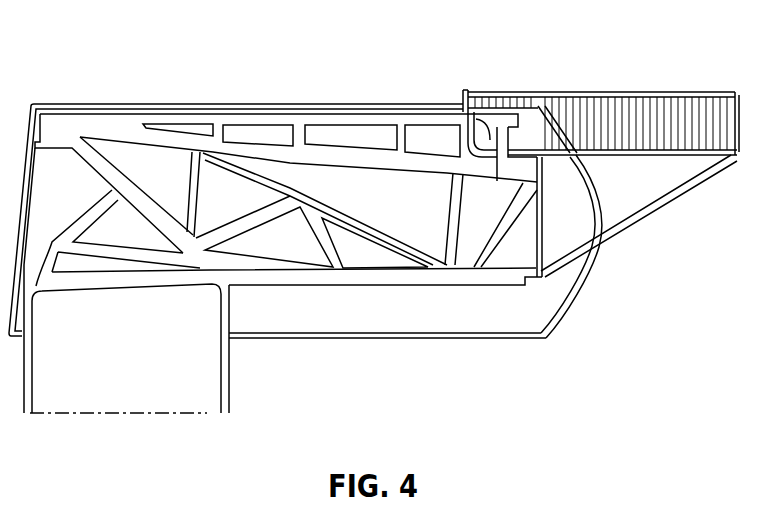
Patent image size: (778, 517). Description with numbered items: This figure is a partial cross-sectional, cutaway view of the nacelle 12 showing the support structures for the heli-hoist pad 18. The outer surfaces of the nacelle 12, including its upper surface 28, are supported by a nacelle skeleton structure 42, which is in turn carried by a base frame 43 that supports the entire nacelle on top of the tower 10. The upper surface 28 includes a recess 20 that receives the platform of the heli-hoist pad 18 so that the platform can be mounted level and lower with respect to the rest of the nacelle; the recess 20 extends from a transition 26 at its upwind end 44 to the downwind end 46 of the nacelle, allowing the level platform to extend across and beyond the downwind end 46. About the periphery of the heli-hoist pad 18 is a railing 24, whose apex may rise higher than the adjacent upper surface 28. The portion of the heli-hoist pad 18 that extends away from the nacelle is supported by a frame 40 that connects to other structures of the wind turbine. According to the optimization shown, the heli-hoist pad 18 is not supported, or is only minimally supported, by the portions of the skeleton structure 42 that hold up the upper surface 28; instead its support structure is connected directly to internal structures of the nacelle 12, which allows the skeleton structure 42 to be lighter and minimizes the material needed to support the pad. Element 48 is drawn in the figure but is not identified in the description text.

The tower 10 is at (231, 389).
The nacelle 12 is at (104, 74).
The heli-hoist pad 18 is at (607, 91).
The recess 20 is at (536, 140).
The railing 24 is at (715, 92).
The transition 26 is at (474, 112).
The upper surface 28 is at (214, 104).
The frame 40 is at (652, 203).
The skeleton structure 42 is at (261, 122).
The base frame 43 is at (118, 289).
The upwind end 44 is at (489, 120).
The downwind end 46 is at (579, 275).
The stem 48 is at (516, 114).